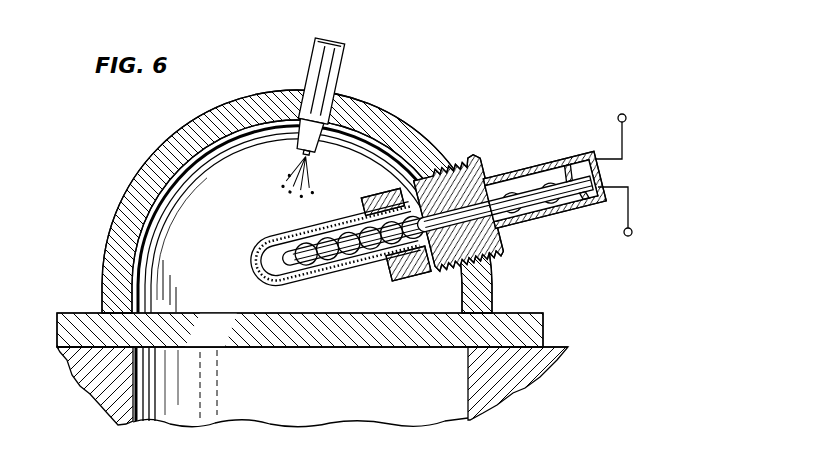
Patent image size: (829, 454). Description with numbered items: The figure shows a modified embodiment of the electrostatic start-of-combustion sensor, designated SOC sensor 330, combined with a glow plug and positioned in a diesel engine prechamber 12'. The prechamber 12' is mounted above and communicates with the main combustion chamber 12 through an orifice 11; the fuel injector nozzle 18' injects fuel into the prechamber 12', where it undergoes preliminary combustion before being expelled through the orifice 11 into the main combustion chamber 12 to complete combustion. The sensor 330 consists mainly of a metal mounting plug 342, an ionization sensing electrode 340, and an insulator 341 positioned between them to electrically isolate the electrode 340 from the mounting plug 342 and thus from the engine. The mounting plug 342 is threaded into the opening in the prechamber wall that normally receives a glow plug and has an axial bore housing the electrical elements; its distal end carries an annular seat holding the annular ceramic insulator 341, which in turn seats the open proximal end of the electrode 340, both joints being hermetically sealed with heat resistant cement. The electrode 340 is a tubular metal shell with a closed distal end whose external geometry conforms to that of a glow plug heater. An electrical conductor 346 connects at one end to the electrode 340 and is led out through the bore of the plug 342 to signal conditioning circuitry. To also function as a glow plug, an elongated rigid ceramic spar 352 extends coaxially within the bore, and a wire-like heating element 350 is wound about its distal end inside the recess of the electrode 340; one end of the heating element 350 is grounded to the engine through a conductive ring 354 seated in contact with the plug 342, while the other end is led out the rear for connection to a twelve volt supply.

The fuel injector nozzle 18' is at (328, 118).
The electrostatic SOC sensor 330 is at (483, 194).
The elongated rigid spar 352 is at (513, 195).
The conductive ring 354 is at (410, 182).
The ionization sensing electrode 340 is at (268, 243).
The prechamber 12' is at (285, 219).
The heating element 350 is at (304, 276).
The insulator 341 is at (388, 268).
The metal mounting plug 342 is at (503, 239).
The electrical conductor 346 is at (628, 190).
The orifice 11 is at (222, 340).
The main combustion chamber 12 is at (312, 387).